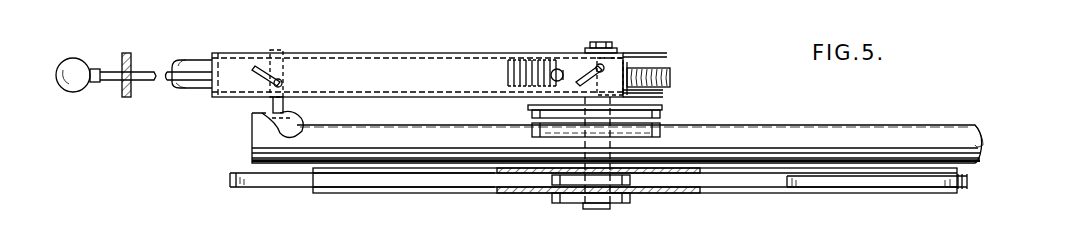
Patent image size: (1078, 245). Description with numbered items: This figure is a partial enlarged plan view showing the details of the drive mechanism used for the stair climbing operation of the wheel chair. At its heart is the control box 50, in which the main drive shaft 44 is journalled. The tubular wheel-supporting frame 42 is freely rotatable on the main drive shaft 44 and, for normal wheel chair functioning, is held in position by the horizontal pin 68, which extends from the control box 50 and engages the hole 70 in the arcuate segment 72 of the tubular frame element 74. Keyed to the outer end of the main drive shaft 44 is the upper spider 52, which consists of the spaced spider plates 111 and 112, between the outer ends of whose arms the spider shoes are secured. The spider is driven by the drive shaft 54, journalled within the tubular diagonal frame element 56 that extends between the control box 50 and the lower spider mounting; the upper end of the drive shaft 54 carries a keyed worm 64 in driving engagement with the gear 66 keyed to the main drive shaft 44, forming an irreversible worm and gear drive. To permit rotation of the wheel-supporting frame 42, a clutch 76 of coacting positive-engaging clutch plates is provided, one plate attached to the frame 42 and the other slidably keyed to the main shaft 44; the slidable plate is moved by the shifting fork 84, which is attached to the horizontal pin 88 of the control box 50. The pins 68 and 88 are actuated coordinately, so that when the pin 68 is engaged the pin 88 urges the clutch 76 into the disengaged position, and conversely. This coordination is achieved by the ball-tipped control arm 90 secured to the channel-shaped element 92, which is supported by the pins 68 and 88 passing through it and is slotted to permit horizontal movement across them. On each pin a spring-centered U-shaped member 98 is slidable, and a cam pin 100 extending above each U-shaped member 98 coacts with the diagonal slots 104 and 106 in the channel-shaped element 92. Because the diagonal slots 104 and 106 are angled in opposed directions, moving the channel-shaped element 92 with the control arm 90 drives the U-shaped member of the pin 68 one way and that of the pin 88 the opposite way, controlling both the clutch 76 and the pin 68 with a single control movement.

The tubular wheel-supporting frame 42 is at (940, 127).
The main drive shaft 44 is at (600, 208).
The control box 50 is at (445, 52).
The upper spider 52 is at (968, 184).
The drive shaft 54 is at (558, 70).
The tubular diagonal frame element 56 is at (190, 60).
The keyed worm 64 is at (530, 64).
The gear 66 is at (670, 77).
The horizontal pin 68 is at (272, 105).
The hole 70 is at (300, 119).
The arcuate segment 72 is at (270, 129).
The tubular frame element 74 is at (470, 52).
The clutch 76 is at (668, 120).
The shifting fork 84 is at (662, 107).
The horizontal pin 88 is at (588, 110).
The ball-tipped control arm 90 is at (167, 80).
The channel-shaped element 92 is at (430, 86).
The U-shaped member 98 is at (283, 70).
The cam pin 100 is at (282, 82).
The diagonal slot 104 is at (265, 68).
The diagonal slot 106 is at (593, 60).
The spider plate 111 is at (758, 193).
The spider plate 112 is at (468, 174).